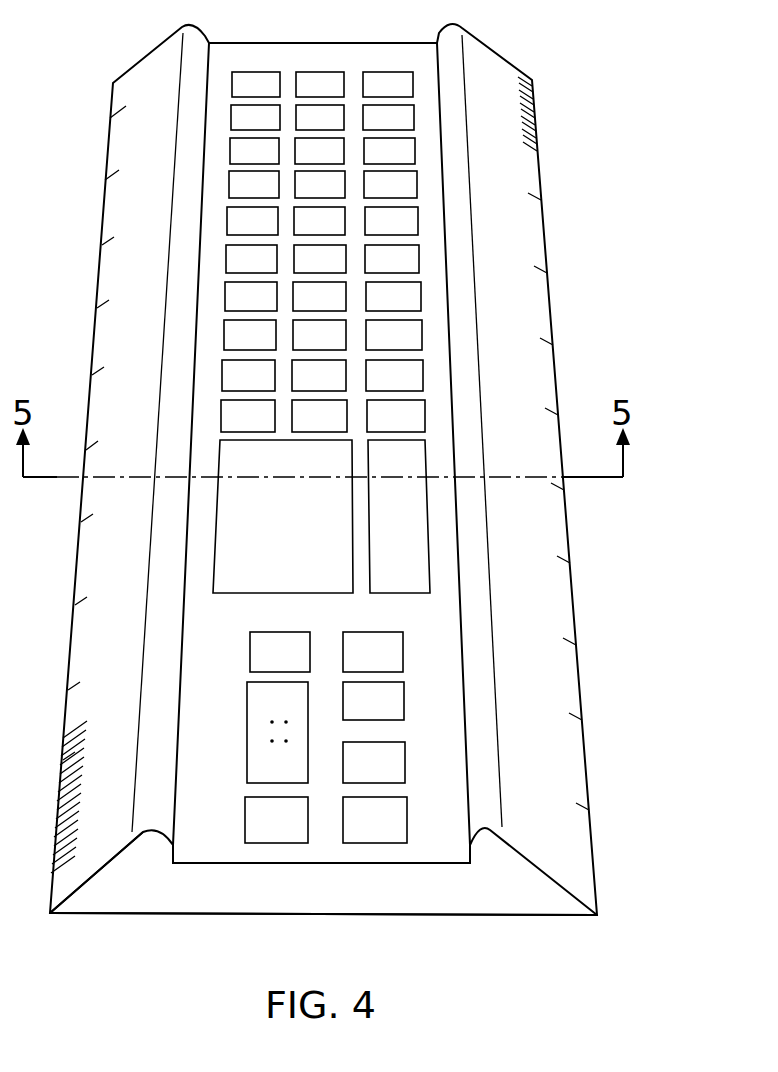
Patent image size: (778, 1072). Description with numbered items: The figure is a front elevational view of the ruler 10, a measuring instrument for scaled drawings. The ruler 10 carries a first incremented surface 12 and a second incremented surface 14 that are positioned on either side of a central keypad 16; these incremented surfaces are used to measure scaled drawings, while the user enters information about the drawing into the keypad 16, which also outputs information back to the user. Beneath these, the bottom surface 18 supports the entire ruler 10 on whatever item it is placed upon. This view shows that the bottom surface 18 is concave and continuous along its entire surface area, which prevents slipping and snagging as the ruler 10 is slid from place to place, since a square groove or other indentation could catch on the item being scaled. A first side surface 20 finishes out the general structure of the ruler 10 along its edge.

The ruler 10 is at (604, 186).
The first incremented surface 12 is at (570, 690).
The second incremented surface 14 is at (78, 655).
The keypad 16 is at (433, 855).
The bottom surface 18 is at (170, 915).
The first side surface 20 is at (250, 905).